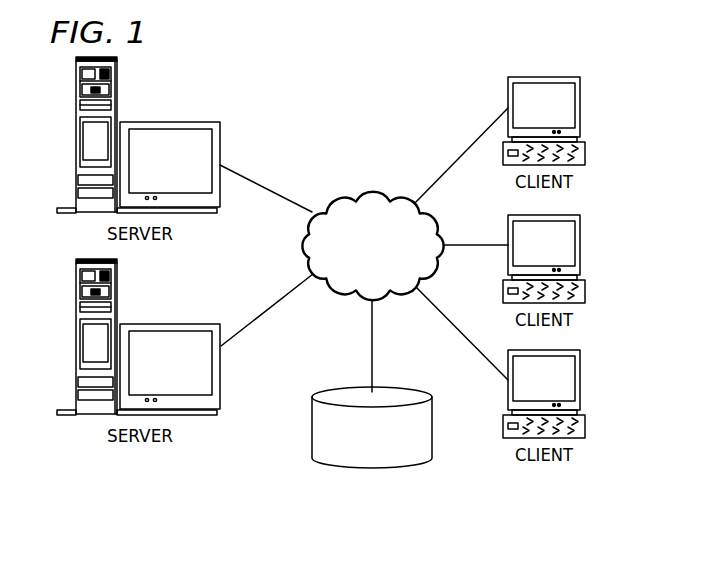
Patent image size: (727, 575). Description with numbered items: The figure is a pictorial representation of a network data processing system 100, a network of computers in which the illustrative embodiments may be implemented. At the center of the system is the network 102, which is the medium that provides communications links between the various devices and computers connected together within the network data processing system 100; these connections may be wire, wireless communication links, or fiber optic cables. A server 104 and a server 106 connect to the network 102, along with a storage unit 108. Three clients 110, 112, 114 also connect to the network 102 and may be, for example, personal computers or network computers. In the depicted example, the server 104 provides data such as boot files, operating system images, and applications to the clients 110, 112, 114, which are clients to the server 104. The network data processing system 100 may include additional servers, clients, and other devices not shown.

The network data processing system 100 is at (418, 89).
The network 102 is at (344, 204).
The server 104 is at (75, 138).
The server 106 is at (75, 340).
The storage unit 108 is at (355, 469).
The client 110 is at (580, 107).
The client 112 is at (580, 245).
The client 114 is at (580, 380).